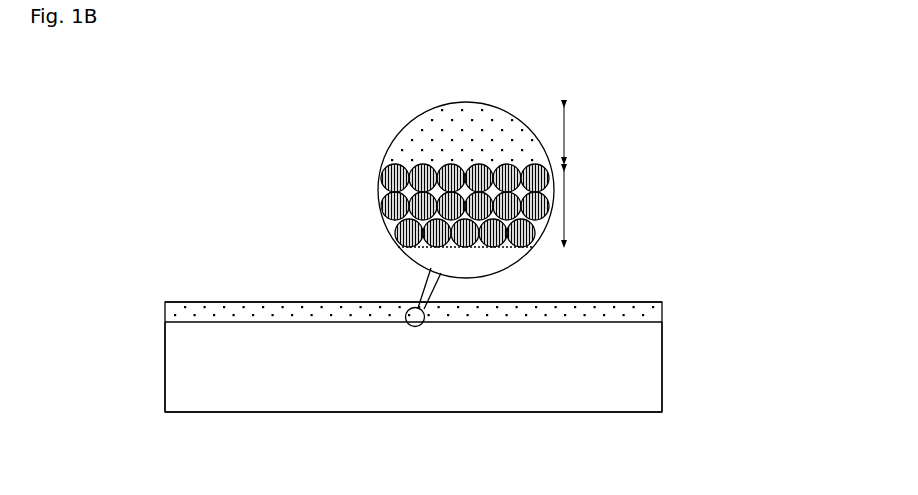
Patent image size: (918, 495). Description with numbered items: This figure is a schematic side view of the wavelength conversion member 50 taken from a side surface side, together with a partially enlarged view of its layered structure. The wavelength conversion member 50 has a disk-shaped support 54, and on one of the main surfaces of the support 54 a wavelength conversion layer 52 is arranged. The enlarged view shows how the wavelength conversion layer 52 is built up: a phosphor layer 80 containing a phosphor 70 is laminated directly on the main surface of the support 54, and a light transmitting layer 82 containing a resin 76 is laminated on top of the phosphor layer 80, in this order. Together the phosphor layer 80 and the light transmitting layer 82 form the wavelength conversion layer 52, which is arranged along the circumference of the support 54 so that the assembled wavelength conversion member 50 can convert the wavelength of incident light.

The wavelength conversion member 50 is at (644, 486).
The wavelength conversion layer 52 is at (185, 313).
The support 54 is at (443, 259).
The phosphor 70 is at (381, 178).
The resin 76 is at (430, 130).
The phosphor layer 80 is at (603, 206).
The light transmitting layer 82 is at (603, 132).